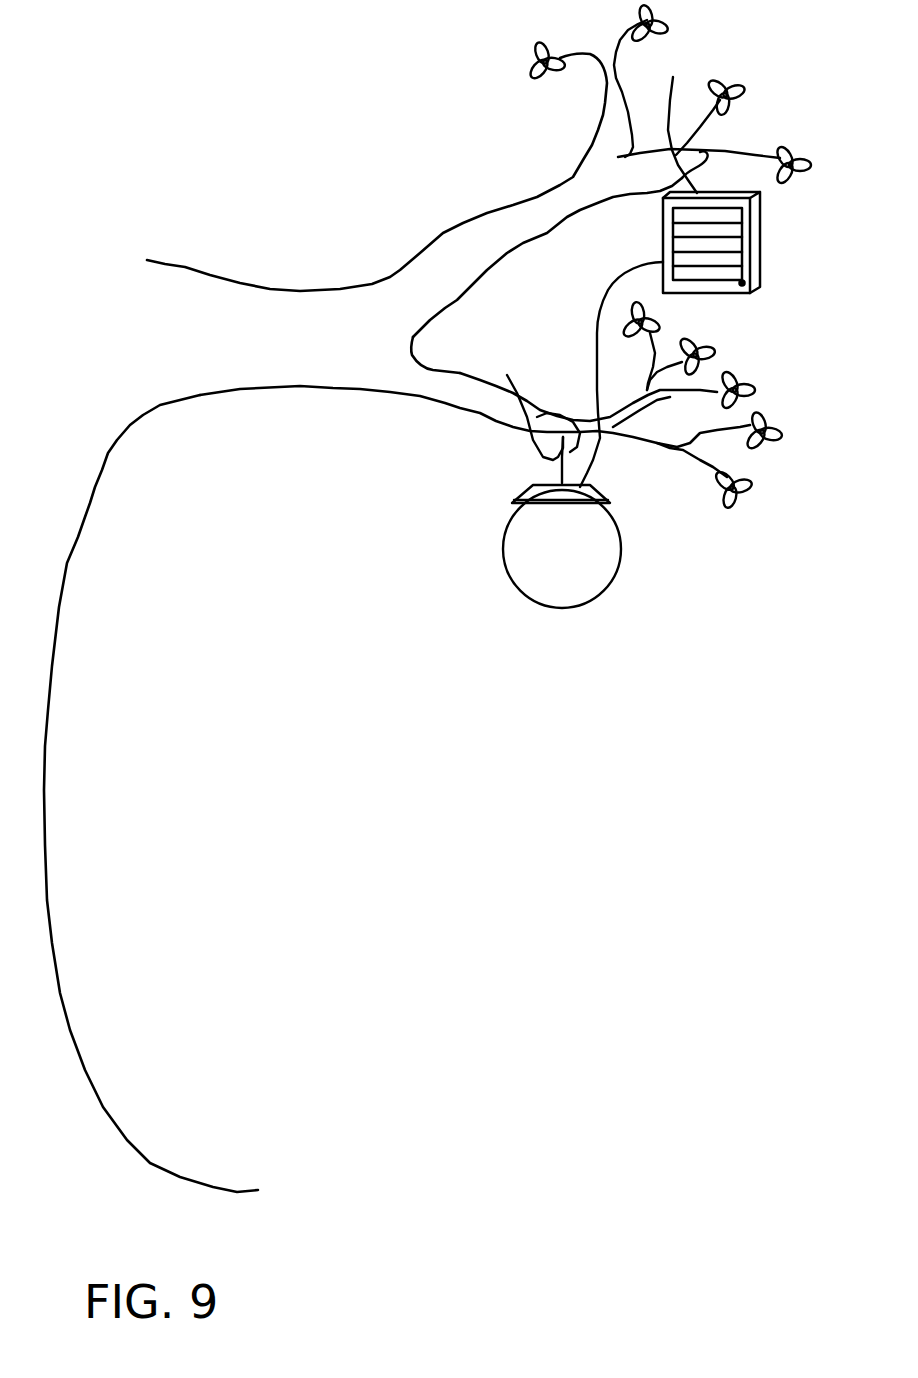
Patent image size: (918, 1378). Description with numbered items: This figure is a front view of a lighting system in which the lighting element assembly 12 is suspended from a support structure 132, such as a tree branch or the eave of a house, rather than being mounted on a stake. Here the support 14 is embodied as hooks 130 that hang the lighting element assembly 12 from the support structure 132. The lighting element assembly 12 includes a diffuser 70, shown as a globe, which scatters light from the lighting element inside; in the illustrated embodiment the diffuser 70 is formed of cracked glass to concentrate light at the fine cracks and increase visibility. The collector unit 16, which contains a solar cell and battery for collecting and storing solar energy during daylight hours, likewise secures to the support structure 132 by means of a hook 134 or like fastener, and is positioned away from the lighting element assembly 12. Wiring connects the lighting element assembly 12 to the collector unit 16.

The lighting element assembly 12 is at (490, 598).
The support 14 is at (520, 455).
The collector unit 16 is at (647, 240).
The diffuser 70 is at (598, 588).
The hooks 130 is at (531, 401).
The support structure 132 is at (357, 365).
The hook 134 is at (669, 256).